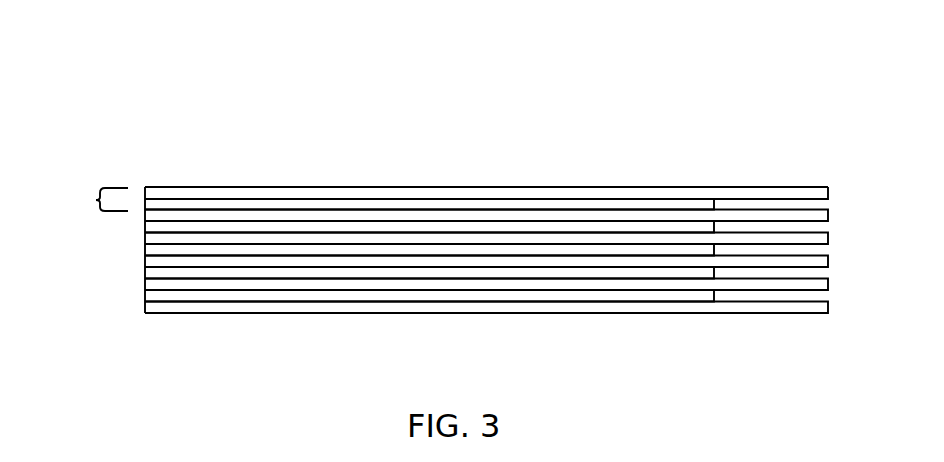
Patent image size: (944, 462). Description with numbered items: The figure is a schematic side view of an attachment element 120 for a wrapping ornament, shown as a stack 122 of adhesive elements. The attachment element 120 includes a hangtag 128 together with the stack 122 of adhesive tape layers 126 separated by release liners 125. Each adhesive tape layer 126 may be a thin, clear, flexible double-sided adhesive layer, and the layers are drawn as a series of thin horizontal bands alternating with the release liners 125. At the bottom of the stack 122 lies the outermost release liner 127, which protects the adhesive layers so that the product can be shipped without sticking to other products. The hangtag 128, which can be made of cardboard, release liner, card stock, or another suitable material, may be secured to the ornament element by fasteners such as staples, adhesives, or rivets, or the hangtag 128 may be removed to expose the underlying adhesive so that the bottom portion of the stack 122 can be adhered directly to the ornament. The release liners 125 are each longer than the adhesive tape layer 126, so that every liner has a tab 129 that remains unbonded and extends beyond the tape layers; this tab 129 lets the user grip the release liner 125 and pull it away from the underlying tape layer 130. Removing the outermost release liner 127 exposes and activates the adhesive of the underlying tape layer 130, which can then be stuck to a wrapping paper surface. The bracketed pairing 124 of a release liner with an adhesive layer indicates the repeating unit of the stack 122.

The attachment element 120 is at (433, 198).
The stack 122 is at (403, 243).
The cell unit 124 is at (94, 200).
The release liner 125 is at (204, 195).
The adhesive tape layer 126 is at (309, 199).
The outermost release liner 127 is at (272, 305).
The hangtag 128 is at (488, 189).
The tab 129 is at (797, 283).
The underlying tape layer 130 is at (570, 297).